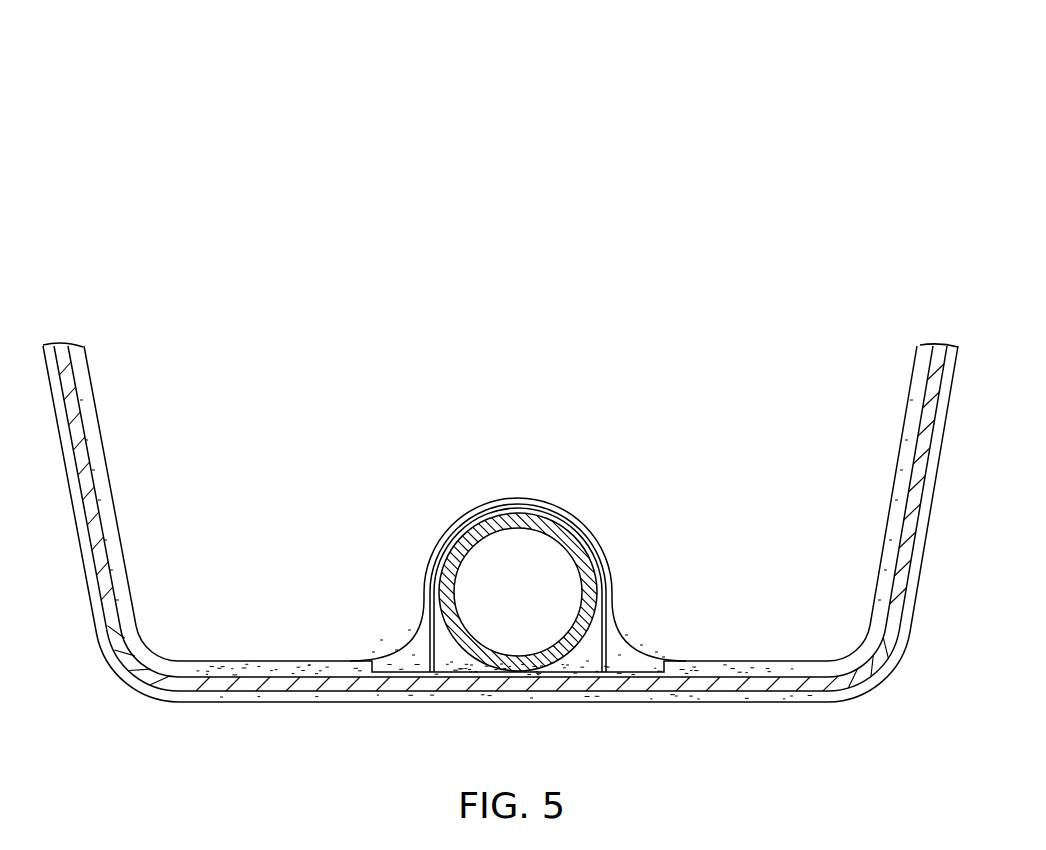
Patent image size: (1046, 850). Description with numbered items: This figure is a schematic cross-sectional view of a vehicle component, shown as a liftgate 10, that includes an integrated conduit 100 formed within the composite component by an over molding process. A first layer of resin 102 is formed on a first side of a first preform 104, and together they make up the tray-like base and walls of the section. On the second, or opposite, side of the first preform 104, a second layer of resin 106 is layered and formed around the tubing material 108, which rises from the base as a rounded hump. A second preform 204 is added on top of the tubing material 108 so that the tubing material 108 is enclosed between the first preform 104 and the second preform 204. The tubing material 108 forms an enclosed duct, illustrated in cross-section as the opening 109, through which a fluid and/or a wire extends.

The liftgate 10 is at (116, 85).
The conduit 100 is at (115, 265).
The first layer of resin 102 is at (720, 702).
The first preform 104 is at (357, 683).
The second layer of resin 106 is at (402, 640).
The tubing material 108 is at (538, 528).
The opening 109 is at (518, 592).
The second preform 204 is at (518, 500).